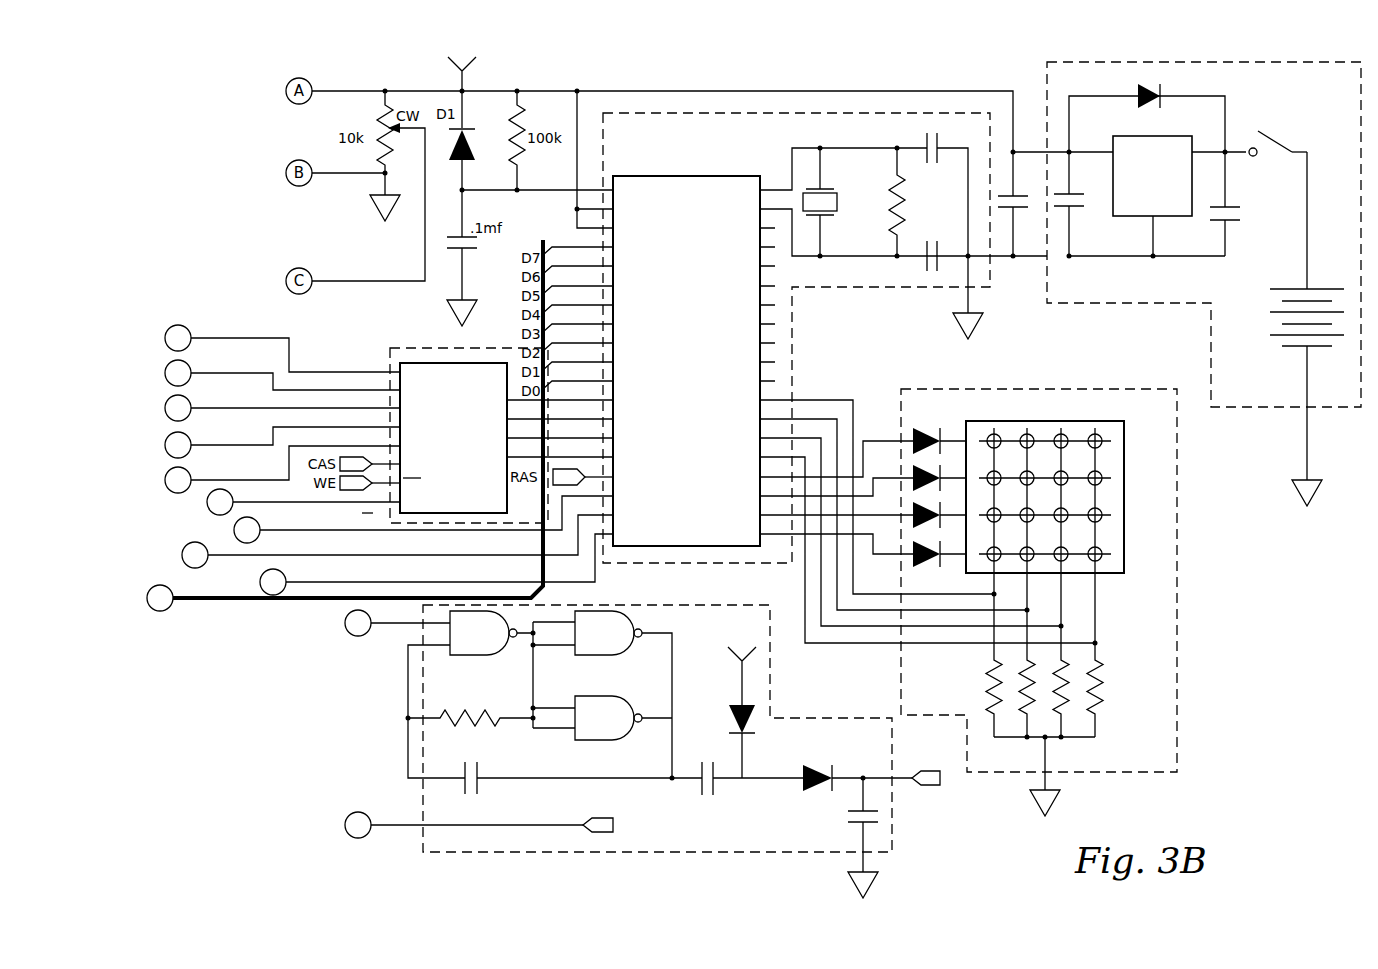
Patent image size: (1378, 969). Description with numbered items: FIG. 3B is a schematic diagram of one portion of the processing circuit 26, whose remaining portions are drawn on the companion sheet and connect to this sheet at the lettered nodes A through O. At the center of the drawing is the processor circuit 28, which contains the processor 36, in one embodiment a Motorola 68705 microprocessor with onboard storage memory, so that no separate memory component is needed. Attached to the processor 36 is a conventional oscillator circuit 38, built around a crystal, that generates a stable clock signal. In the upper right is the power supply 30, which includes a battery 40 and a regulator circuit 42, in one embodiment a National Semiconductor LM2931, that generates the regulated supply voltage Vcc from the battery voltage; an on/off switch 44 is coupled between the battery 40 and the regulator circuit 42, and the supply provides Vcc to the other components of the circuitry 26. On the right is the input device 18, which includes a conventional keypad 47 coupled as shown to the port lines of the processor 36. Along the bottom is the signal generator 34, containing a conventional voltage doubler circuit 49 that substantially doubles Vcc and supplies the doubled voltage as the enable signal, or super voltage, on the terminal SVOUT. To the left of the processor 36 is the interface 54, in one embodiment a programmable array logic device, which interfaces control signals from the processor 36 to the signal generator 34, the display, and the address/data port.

The input device 18 is at (1053, 602).
The processing circuit 26 is at (246, 752).
The processor circuit 28 is at (713, 112).
The power supply 30 is at (1151, 283).
The signal generator 34 is at (648, 753).
The processor 36 is at (676, 186).
The oscillator circuit 38 is at (868, 258).
The battery 40 is at (1256, 354).
The regulator circuit 42 is at (1277, 156).
The on/off switch 44 is at (1267, 158).
The keypad 47 is at (1113, 458).
The voltage doubler circuit 49 is at (688, 664).
The interface 54 is at (412, 348).